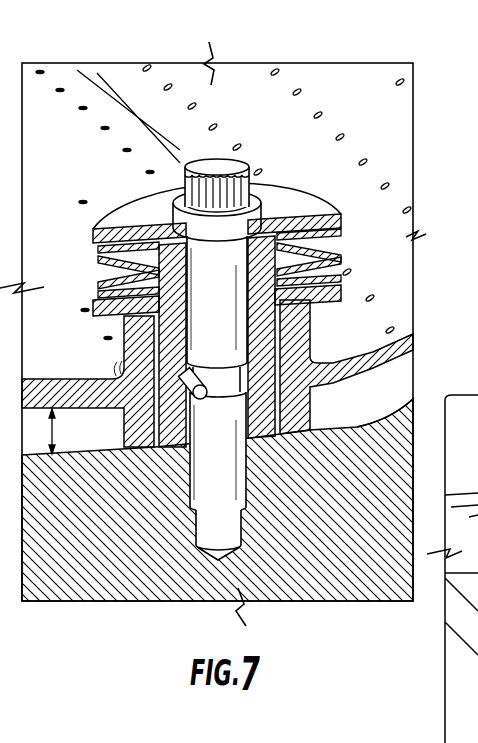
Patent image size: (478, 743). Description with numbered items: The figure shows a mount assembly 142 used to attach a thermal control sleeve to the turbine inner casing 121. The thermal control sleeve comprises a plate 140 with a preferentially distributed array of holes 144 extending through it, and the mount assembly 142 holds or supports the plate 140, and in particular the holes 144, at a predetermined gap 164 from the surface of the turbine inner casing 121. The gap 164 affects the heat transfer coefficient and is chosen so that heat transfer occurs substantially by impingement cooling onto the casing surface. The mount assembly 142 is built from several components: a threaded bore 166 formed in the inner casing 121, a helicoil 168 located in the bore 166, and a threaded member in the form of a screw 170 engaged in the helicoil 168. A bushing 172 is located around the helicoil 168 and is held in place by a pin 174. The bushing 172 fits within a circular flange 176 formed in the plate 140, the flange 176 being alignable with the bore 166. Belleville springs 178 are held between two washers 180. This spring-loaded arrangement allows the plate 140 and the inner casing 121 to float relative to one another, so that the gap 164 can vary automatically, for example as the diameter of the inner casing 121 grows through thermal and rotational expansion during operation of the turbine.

The turbine inner casing 121 is at (217, 500).
The plate 140 is at (353, 375).
The mount assembly 142 is at (318, 184).
The holes 144 is at (197, 104).
The gap 164 is at (55, 432).
The threaded bore 166 is at (240, 530).
The helicoil 168 is at (240, 488).
The screw 170 is at (271, 205).
The bushing 172 is at (340, 350).
The pin 174 is at (200, 397).
The circular flange 176 is at (300, 337).
The Belleville springs 178 is at (345, 262).
The washers 180 is at (340, 290).